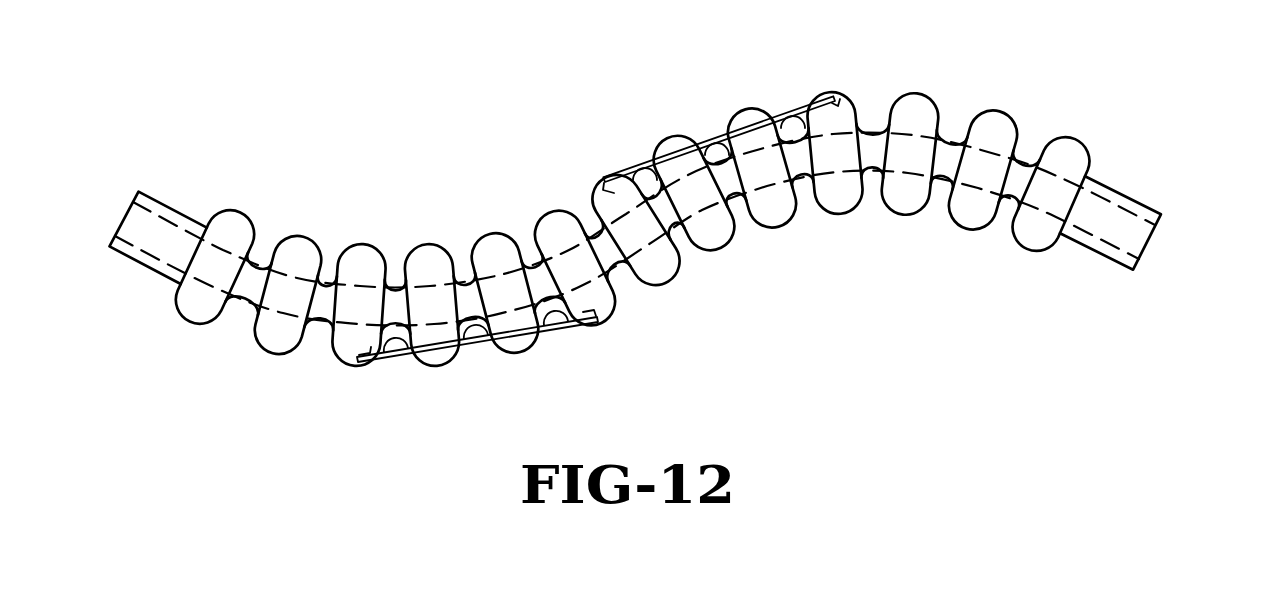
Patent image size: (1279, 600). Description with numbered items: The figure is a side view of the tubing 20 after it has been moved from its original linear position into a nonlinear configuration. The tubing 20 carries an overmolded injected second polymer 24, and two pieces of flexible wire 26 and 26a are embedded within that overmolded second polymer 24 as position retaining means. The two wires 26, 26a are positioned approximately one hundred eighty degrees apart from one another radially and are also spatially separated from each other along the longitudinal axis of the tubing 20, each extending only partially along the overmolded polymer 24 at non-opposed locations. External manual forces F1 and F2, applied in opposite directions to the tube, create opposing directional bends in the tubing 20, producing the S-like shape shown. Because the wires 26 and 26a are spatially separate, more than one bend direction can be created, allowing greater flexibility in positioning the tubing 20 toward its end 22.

The tubing 20 is at (388, 182).
The distal tube end 22 is at (1153, 246).
The overmolded injected second polymer 24 is at (1073, 151).
The flexible wire 26 is at (632, 167).
The flexible wire 26a is at (557, 338).
The external manual force F1 is at (258, 150).
The external manual force F2 is at (889, 252).